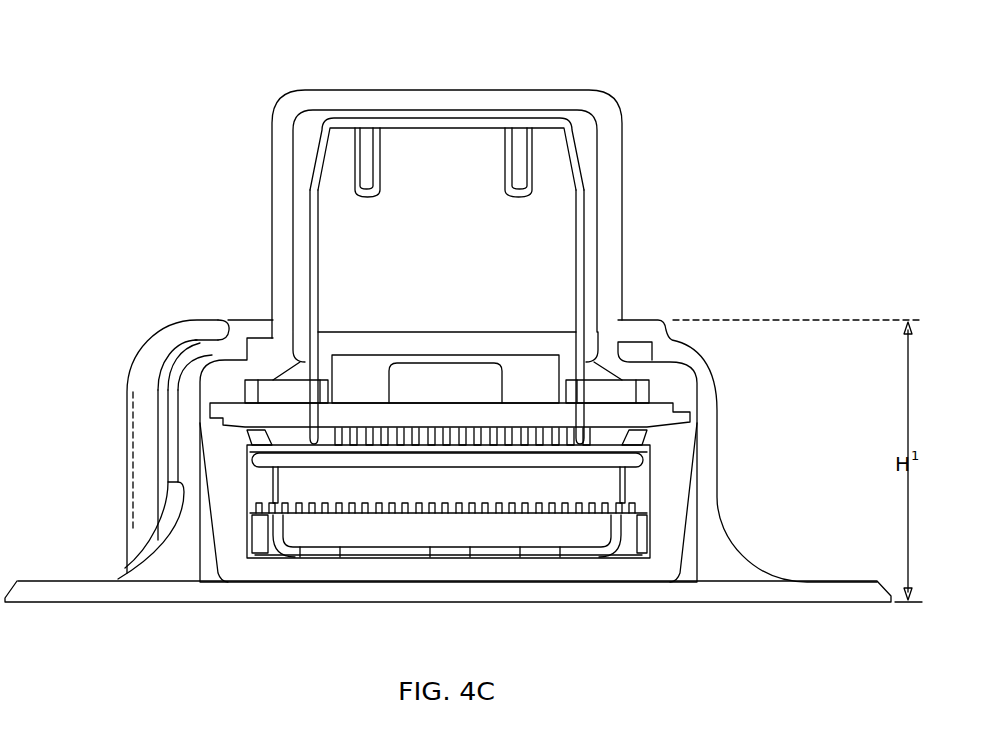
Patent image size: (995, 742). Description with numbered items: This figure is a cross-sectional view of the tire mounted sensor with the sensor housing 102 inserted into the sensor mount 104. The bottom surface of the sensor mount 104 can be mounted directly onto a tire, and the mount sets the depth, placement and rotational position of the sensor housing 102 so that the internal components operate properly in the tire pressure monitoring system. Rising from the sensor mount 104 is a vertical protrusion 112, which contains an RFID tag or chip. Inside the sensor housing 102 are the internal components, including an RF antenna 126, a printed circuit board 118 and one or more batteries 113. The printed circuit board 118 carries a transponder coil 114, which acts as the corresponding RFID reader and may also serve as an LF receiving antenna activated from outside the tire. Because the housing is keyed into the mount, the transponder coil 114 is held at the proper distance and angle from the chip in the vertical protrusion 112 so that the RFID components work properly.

The sensor housing 102 is at (553, 100).
The RF antenna 126 is at (465, 123).
The vertical protrusion 112 is at (143, 358).
The sensor mount 104 is at (120, 590).
The transponder coil 114 is at (372, 368).
The printed circuit board 118 is at (540, 412).
The battery 113 is at (617, 482).